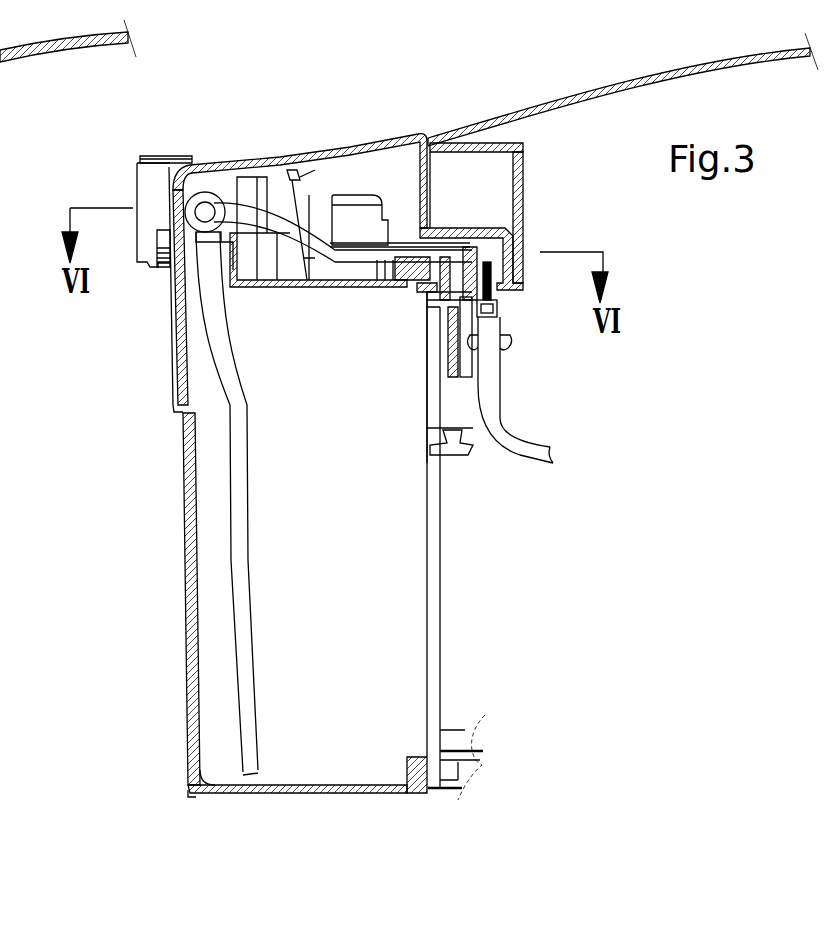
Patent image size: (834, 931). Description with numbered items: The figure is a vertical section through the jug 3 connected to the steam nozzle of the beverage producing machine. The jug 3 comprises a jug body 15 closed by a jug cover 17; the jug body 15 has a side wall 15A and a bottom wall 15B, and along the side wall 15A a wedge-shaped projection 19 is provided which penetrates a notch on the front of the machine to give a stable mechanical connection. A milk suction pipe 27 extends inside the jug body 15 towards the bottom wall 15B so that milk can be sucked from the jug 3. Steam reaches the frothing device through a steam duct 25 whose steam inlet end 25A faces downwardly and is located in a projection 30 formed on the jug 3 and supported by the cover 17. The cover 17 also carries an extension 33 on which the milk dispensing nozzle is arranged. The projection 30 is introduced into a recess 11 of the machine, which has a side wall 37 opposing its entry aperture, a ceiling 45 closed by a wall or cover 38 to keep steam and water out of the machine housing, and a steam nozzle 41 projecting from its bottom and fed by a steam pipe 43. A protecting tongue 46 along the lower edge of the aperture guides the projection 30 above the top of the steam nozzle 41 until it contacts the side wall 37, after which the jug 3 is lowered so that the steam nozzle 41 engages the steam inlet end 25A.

The jug 3 is at (156, 534).
The recess 11 is at (475, 178).
The jug body 15 is at (470, 548).
The side wall 15A is at (417, 578).
The bottom wall 15B is at (358, 780).
The jug cover 17 is at (350, 180).
The wedge-shaped projection 19 is at (437, 417).
The steam duct 25 is at (250, 217).
The steam inlet end 25A is at (500, 253).
The milk suction pipe 27 is at (245, 672).
The projection 30 is at (455, 188).
The extension 33 is at (145, 180).
The side wall 37 is at (517, 213).
The wall or cover 38 is at (507, 140).
The steam nozzle 41 is at (493, 297).
The steam pipe 43 is at (490, 420).
The ceiling 45 is at (497, 153).
The protecting tongue 46 is at (430, 267).